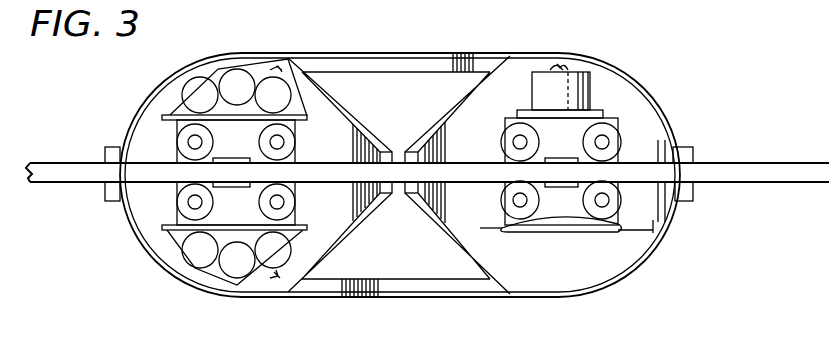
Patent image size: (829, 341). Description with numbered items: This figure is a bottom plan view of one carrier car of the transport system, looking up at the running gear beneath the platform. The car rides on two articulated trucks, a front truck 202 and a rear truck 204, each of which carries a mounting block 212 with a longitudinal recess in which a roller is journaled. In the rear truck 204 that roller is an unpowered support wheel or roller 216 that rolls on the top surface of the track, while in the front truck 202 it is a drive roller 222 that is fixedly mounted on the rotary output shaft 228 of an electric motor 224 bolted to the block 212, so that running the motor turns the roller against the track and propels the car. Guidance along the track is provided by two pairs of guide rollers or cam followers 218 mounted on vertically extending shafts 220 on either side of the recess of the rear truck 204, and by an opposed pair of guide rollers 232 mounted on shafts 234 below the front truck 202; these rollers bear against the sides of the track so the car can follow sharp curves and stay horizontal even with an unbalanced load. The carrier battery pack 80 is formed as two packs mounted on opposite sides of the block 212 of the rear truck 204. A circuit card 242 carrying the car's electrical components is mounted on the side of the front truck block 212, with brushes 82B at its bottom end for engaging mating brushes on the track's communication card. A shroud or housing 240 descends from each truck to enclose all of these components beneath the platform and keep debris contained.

The shroud or housing 240 is at (250, 53).
The front truck 202 is at (432, 53).
The rear truck 204 is at (172, 119).
The mounting block 212 is at (255, 128).
The support wheel or roller 216 is at (217, 202).
The carrier battery pack 80 is at (172, 107).
The vertically extending shafts 220 is at (278, 142).
The guide rollers or cam followers 218 is at (290, 148).
The electric motor 224 is at (587, 80).
The guide rollers 232 is at (610, 132).
The shafts 234 is at (603, 200).
The drive roller 222 is at (556, 186).
The brushes 82B is at (573, 220).
The circuit card 242 is at (648, 232).
The rotary output shaft 228 is at (563, 187).